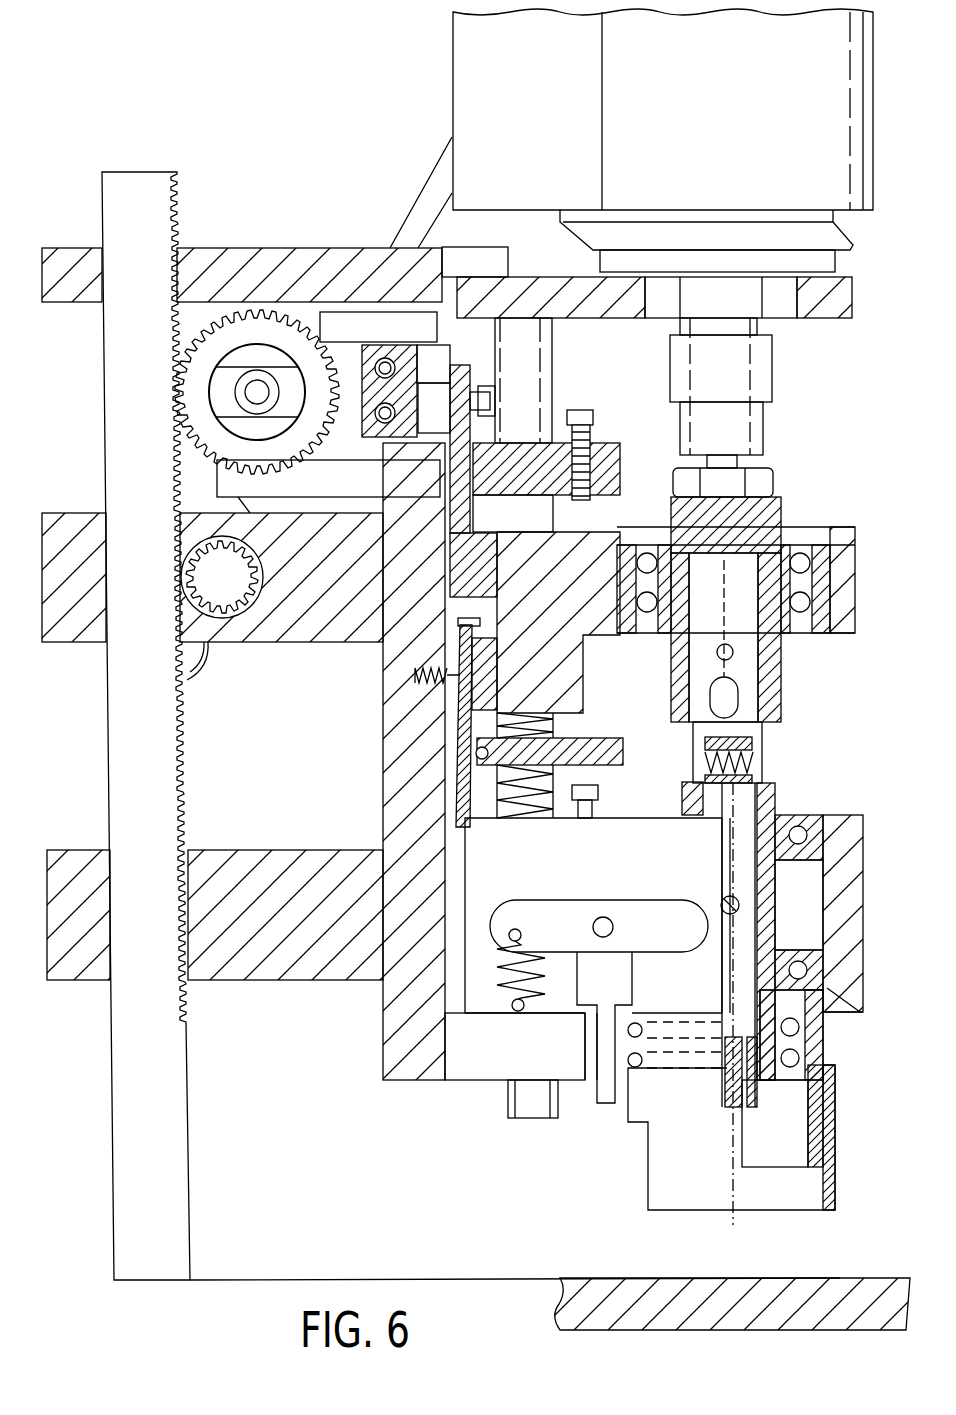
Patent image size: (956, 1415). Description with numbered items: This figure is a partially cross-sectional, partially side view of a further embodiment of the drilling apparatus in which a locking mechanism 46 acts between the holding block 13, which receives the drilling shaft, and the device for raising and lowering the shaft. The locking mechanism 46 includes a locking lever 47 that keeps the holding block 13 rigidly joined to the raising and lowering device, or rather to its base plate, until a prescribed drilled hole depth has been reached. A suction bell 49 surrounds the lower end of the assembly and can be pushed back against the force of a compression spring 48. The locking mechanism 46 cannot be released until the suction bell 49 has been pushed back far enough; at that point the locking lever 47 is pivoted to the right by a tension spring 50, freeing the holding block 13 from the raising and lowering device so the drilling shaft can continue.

The holder 13 is at (843, 890).
The locking mechanism 46 is at (533, 1058).
The locking lever 47 is at (597, 1093).
The compression spring 48 is at (827, 1018).
The suction bell 49 is at (670, 1190).
The tension spring 50 is at (495, 993).